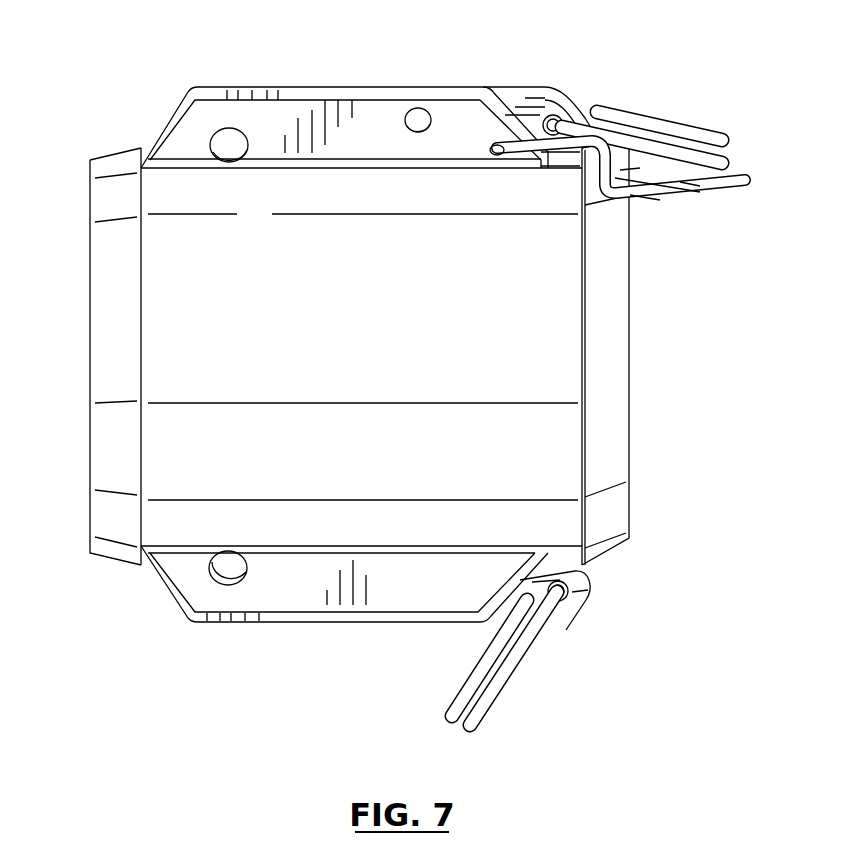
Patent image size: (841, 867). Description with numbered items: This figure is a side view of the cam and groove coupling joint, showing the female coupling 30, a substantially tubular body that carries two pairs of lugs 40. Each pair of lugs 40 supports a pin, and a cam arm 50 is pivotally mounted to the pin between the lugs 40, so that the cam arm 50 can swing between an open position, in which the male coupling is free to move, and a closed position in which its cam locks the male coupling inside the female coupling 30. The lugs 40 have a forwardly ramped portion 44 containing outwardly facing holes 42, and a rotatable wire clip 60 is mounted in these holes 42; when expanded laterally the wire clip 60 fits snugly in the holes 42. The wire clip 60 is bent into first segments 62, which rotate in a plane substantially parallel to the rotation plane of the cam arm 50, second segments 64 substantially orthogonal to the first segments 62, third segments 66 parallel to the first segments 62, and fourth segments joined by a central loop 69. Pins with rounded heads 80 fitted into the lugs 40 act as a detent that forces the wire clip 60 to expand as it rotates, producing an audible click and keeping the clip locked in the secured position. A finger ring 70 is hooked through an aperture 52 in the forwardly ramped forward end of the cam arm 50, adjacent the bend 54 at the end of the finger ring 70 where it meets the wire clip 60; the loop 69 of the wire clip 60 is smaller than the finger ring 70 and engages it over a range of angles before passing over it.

The female coupling 30 is at (620, 503).
The lugs 40 is at (355, 112).
The holes 42 is at (495, 156).
The forwardly ramped portion 44 is at (465, 118).
The cam arms 50 is at (517, 87).
The aperture 52 is at (548, 100).
The wire loop 54 is at (586, 98).
The rotatable wire clip 60 is at (757, 183).
The first segments 62 is at (522, 160).
The second segments 64 is at (653, 190).
The third segments 66 is at (640, 205).
The central loop 69 is at (693, 188).
The finger ring 70 is at (740, 135).
The rounded heads 80 is at (418, 112).